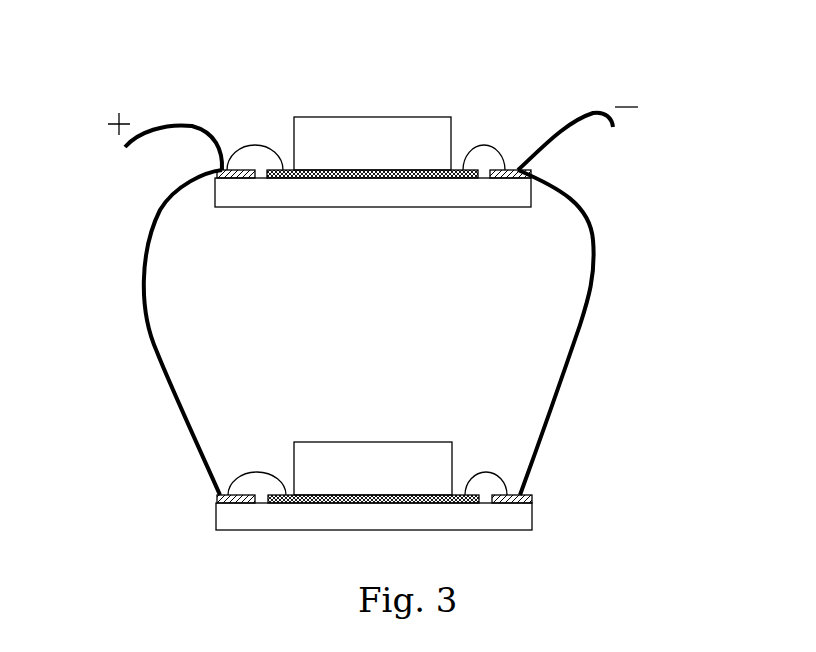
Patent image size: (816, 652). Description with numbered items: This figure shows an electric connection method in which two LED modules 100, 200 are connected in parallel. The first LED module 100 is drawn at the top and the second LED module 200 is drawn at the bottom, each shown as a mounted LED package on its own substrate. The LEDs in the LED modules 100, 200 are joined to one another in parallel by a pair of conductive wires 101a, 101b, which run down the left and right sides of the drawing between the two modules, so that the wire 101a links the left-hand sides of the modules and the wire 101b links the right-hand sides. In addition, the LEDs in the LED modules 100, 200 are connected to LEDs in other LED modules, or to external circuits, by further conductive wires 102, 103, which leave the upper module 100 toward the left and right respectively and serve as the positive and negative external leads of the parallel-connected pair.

The LED module 100 is at (306, 85).
The LED module 200 is at (416, 408).
The conductive wire 101a is at (157, 352).
The conductive wire 101b is at (583, 320).
The conductive wire 102 is at (180, 125).
The conductive wire 103 is at (560, 118).